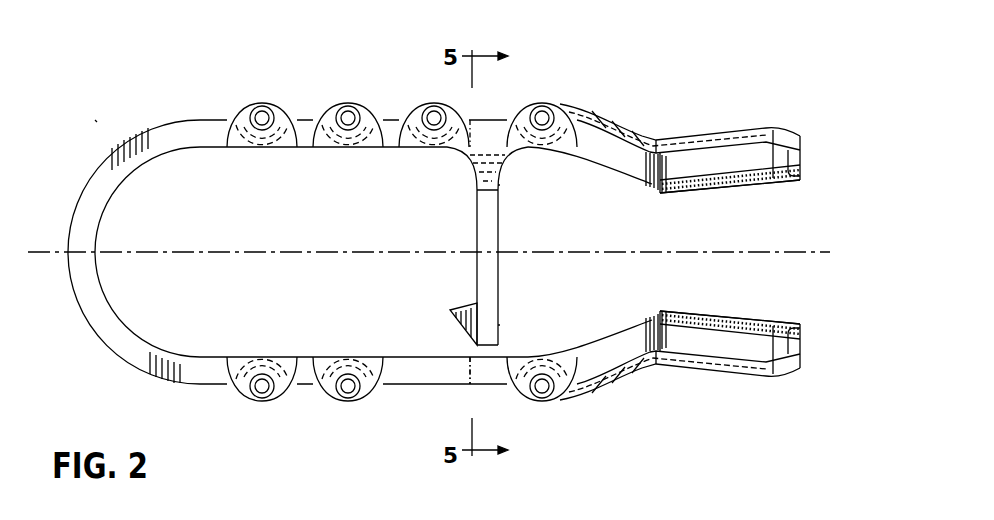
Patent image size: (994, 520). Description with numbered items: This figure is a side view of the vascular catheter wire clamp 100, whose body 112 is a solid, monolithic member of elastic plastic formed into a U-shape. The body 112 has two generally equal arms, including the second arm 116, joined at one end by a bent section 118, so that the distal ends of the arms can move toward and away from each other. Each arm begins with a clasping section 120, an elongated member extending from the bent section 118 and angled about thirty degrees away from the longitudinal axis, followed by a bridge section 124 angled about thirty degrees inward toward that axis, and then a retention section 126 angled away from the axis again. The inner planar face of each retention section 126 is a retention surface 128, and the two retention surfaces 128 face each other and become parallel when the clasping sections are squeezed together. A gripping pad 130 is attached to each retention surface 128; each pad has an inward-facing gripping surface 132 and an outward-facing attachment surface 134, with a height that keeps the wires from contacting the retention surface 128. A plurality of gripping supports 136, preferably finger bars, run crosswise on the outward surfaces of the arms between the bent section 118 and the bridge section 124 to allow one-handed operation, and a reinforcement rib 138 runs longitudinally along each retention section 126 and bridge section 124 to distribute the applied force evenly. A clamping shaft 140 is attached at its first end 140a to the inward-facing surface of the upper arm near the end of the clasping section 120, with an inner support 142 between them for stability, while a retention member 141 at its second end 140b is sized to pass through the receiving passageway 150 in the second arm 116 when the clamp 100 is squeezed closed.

The vascular catheter wire clamp 100 is at (92, 350).
The body 112 is at (200, 118).
The second arm 116 is at (203, 385).
The bent section 118 is at (90, 177).
The clasping section 120 is at (302, 119).
The bridge section 124 is at (590, 138).
The retention section 126 is at (728, 152).
The retention surface 128 is at (652, 186).
The gripping pad 130 is at (762, 181).
The gripping surface 132 is at (790, 152).
The attachment surface 134 is at (723, 185).
The gripping supports 136 is at (258, 103).
The reinforcement rib 138 is at (625, 130).
The clamping shaft 140 is at (500, 240).
The first end 140a is at (502, 187).
The second end 140b is at (502, 327).
The retention member 141 is at (452, 328).
The inner support 142 is at (462, 162).
The receiving passageway 150 is at (500, 386).